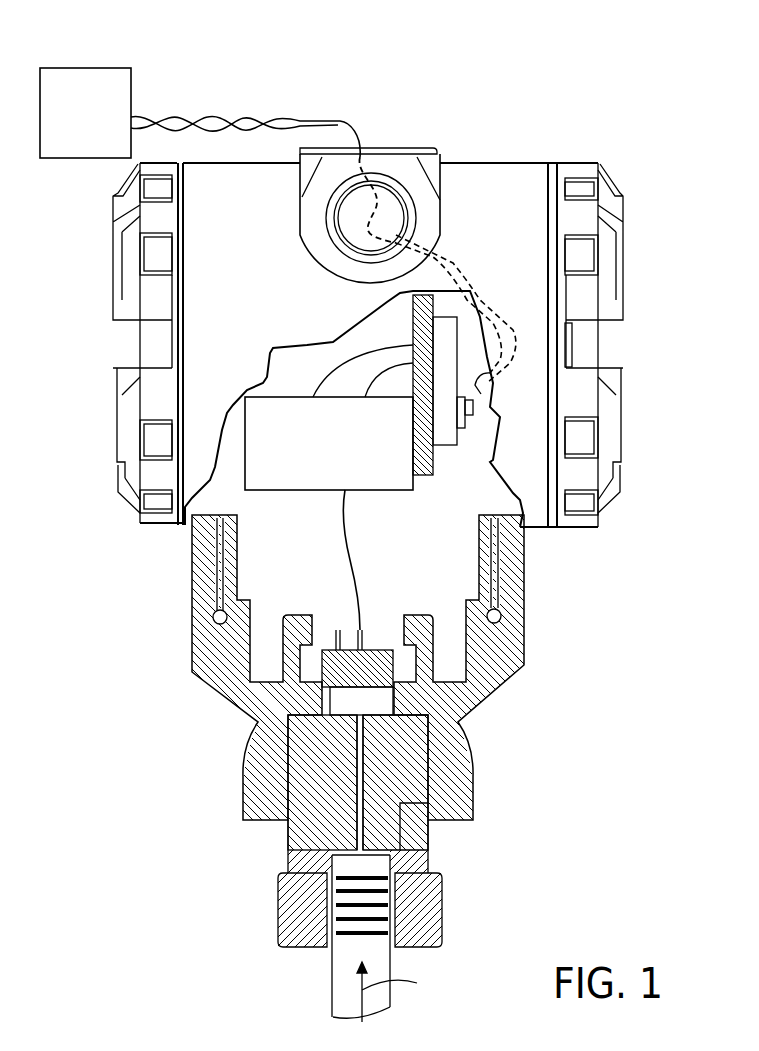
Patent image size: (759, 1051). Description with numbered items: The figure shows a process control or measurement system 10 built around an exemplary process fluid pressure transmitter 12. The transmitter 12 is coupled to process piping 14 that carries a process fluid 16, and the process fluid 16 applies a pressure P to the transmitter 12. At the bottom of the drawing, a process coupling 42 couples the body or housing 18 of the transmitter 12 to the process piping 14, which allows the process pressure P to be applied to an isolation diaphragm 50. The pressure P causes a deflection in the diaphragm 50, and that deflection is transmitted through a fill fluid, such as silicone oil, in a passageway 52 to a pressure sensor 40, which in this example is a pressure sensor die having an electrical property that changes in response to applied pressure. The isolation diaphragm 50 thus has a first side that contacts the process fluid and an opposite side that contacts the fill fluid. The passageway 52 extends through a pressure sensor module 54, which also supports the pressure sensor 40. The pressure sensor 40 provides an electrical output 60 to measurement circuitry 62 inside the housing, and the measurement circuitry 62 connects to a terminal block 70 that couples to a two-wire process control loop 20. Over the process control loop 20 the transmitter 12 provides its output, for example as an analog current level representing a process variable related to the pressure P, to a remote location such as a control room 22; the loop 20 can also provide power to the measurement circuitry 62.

The process control or measurement system 10 is at (425, 117).
The pressure transmitter 12 is at (505, 155).
The process piping 14 is at (330, 957).
The process fluid 16 is at (337, 1000).
The body or housing 18 is at (195, 570).
The two-wire process control loop 20 is at (229, 112).
The control room 22 is at (105, 160).
The pressure sensor 40 is at (398, 640).
The process coupling 42 is at (422, 892).
The isolation diaphragm 50 is at (290, 870).
The passageway 52 is at (367, 775).
The pressure sensor module 54 is at (380, 822).
The electrical output 60 is at (362, 538).
The measurement circuitry 62 is at (329, 443).
The terminal block 70 is at (437, 478).
The pressure P is at (404, 992).